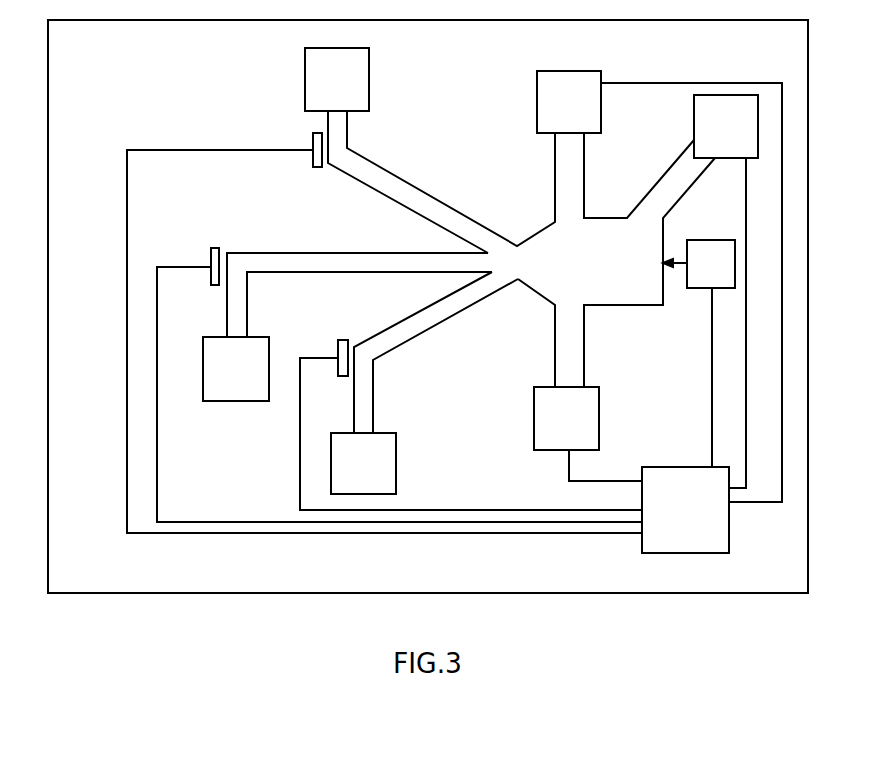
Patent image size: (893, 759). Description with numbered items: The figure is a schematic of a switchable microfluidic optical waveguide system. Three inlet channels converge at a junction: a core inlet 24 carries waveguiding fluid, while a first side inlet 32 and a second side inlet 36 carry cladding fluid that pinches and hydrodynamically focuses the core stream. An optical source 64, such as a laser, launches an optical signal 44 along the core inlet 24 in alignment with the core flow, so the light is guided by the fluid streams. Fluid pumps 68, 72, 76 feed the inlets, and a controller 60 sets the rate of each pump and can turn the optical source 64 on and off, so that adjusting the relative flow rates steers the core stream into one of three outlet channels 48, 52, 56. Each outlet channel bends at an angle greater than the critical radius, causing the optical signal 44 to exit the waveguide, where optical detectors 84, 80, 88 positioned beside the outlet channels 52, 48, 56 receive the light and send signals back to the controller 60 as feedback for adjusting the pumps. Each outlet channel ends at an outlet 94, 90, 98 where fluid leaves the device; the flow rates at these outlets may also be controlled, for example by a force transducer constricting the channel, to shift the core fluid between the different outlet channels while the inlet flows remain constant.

The core inlet 24 is at (669, 185).
The first side inlet 32 is at (570, 198).
The second side inlet 36 is at (570, 363).
The optical signal 44 is at (677, 258).
The outlet channel 48 is at (315, 262).
The outlet channel 52 is at (373, 176).
The outlet channel 56 is at (395, 334).
The controller 60 is at (669, 517).
The optical source 64 is at (697, 277).
The fluid pump 68 is at (710, 132).
The fluid pump 72 is at (553, 106).
The fluid pump 76 is at (550, 424).
The optical detector 80 is at (211, 255).
The optical detector 84 is at (312, 158).
The optical detector 88 is at (338, 348).
The outlet 90 is at (220, 373).
The outlet 94 is at (322, 86).
The outlet 98 is at (347, 468).